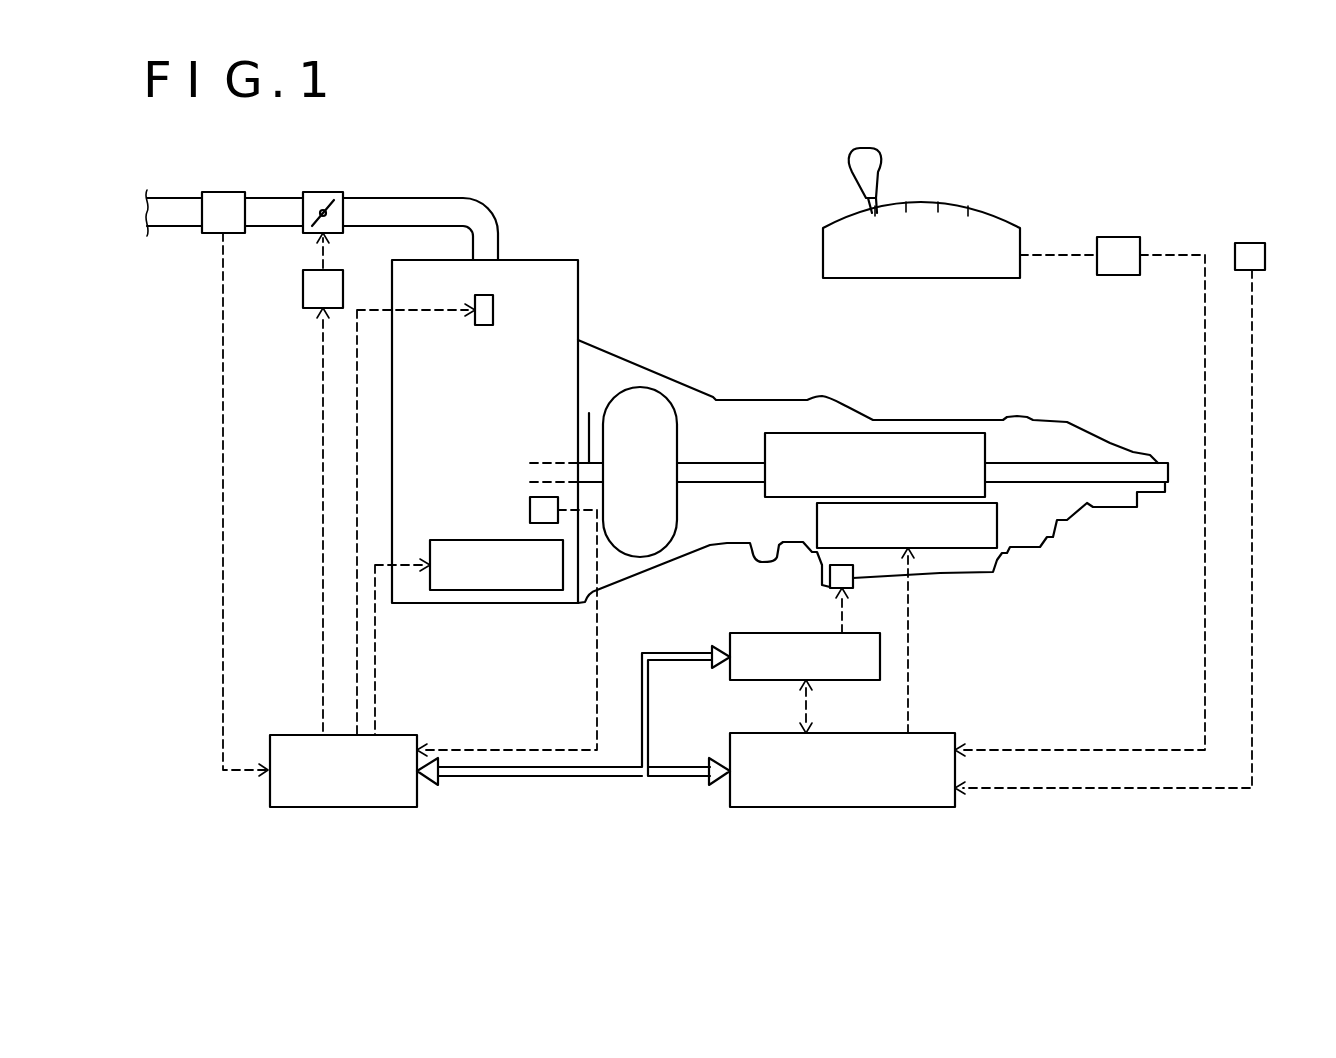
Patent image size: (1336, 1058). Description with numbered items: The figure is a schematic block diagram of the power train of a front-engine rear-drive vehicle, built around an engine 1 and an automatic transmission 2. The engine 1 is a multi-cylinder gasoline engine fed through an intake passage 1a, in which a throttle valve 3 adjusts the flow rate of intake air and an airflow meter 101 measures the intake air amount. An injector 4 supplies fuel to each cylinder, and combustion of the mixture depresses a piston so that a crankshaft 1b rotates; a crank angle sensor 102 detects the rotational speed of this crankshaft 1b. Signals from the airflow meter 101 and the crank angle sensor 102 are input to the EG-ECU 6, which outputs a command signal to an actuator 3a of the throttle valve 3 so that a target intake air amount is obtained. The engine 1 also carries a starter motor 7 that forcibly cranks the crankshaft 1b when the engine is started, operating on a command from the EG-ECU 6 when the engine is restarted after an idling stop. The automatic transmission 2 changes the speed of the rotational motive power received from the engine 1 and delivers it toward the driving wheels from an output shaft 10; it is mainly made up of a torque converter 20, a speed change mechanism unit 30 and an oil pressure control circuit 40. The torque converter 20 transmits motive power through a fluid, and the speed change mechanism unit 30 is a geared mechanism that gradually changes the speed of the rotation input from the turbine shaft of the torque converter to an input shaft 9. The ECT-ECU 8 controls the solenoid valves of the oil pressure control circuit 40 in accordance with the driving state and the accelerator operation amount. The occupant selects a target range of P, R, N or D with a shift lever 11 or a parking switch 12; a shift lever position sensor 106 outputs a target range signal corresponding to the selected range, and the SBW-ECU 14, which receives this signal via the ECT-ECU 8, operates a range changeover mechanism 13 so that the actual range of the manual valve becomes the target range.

The engine 1 is at (556, 260).
The intake passage 1a is at (478, 204).
The crankshaft 1b is at (589, 413).
The automatic transmission 2 is at (815, 389).
The throttle valve 3 is at (352, 190).
The actuator 3a is at (303, 291).
The injector 4 is at (493, 310).
The EG-ECU 6 is at (345, 807).
The starter motor 7 is at (500, 590).
The ECT-ECU 8 is at (843, 807).
The input shaft 9 is at (720, 473).
The output shaft 10 is at (1145, 470).
The shift lever 11 is at (863, 160).
The parking switch 12 is at (1252, 243).
The range changeover mechanism 13 is at (830, 578).
The SBW-ECU 14 is at (762, 680).
The torque converter 20 is at (652, 407).
The speed change mechanism unit 30 is at (945, 440).
The oil pressure control circuit 40 is at (938, 548).
The airflow meter 101 is at (227, 192).
The crank angle sensor 102 is at (530, 512).
The shift lever position sensor 106 is at (1118, 237).